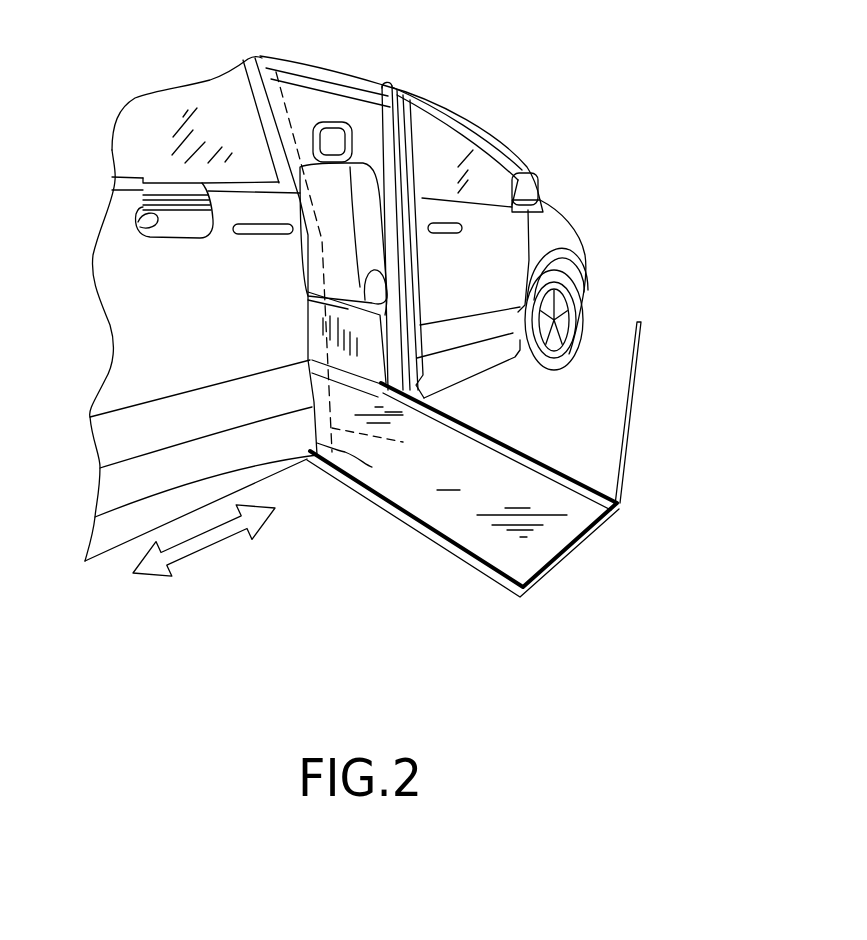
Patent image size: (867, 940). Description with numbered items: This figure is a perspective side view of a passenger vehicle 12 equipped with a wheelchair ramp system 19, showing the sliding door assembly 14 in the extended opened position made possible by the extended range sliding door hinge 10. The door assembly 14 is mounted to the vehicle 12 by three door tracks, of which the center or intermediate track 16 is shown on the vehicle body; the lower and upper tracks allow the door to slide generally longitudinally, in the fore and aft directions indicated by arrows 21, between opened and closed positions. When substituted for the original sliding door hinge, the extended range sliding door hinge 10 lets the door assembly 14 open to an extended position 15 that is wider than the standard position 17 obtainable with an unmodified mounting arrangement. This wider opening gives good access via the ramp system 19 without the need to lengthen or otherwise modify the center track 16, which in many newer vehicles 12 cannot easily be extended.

The extended range sliding door hinge 10 is at (558, 55).
The passenger vehicle 12 is at (405, 68).
The sliding door assembly 14 is at (226, 337).
The extended position 15 is at (359, 465).
The center or intermediate track 16 is at (138, 222).
The standard position 17 is at (384, 439).
The wheelchair ramp system 19 is at (630, 553).
The arrows 21 is at (218, 548).